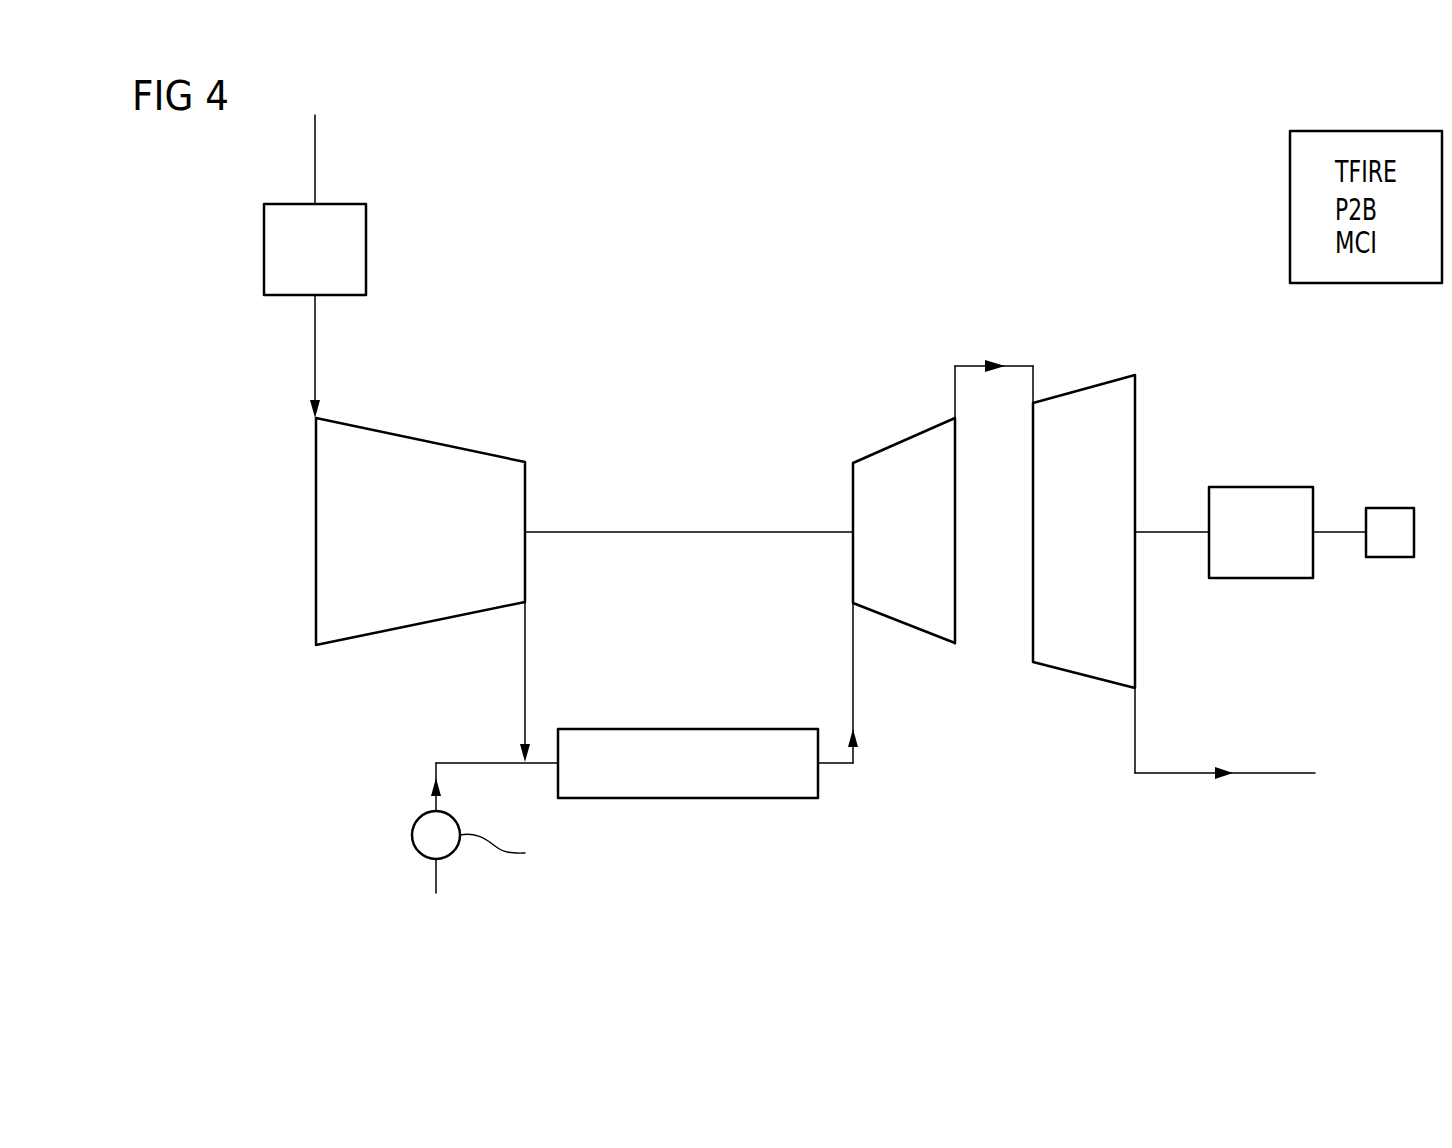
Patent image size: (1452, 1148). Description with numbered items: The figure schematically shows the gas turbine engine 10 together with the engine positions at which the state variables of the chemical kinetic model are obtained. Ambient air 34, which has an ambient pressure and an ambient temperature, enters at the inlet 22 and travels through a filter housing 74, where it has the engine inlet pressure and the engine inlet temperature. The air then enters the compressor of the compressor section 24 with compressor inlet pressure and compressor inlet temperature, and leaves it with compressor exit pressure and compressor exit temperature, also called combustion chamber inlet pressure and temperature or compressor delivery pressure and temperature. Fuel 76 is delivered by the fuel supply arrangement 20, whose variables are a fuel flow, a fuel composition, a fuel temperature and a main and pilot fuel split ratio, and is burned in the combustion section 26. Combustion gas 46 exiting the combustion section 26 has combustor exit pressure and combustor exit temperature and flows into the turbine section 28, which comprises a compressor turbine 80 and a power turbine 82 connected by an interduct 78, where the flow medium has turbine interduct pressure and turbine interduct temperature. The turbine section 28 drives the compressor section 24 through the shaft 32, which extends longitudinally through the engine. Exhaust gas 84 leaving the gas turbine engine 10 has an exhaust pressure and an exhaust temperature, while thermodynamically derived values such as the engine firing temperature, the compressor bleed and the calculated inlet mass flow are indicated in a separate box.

The gas turbine engine 10 is at (757, 197).
The fuel supply arrangement 20 is at (412, 835).
The inlet 22 is at (465, 226).
The compressor section 24 is at (525, 490).
The combustion section 26 is at (793, 800).
The turbine section 28 is at (1028, 226).
The shaft 32 is at (1387, 558).
The ambient air 34 is at (315, 143).
The combustion gas 46 is at (853, 682).
The filter housing 74 is at (366, 246).
The fuel 76 is at (436, 896).
The interduct 78 is at (985, 366).
The compressor turbine 80 is at (853, 490).
The power turbine 82 is at (1135, 410).
The exhaust gas 84 is at (1241, 751).